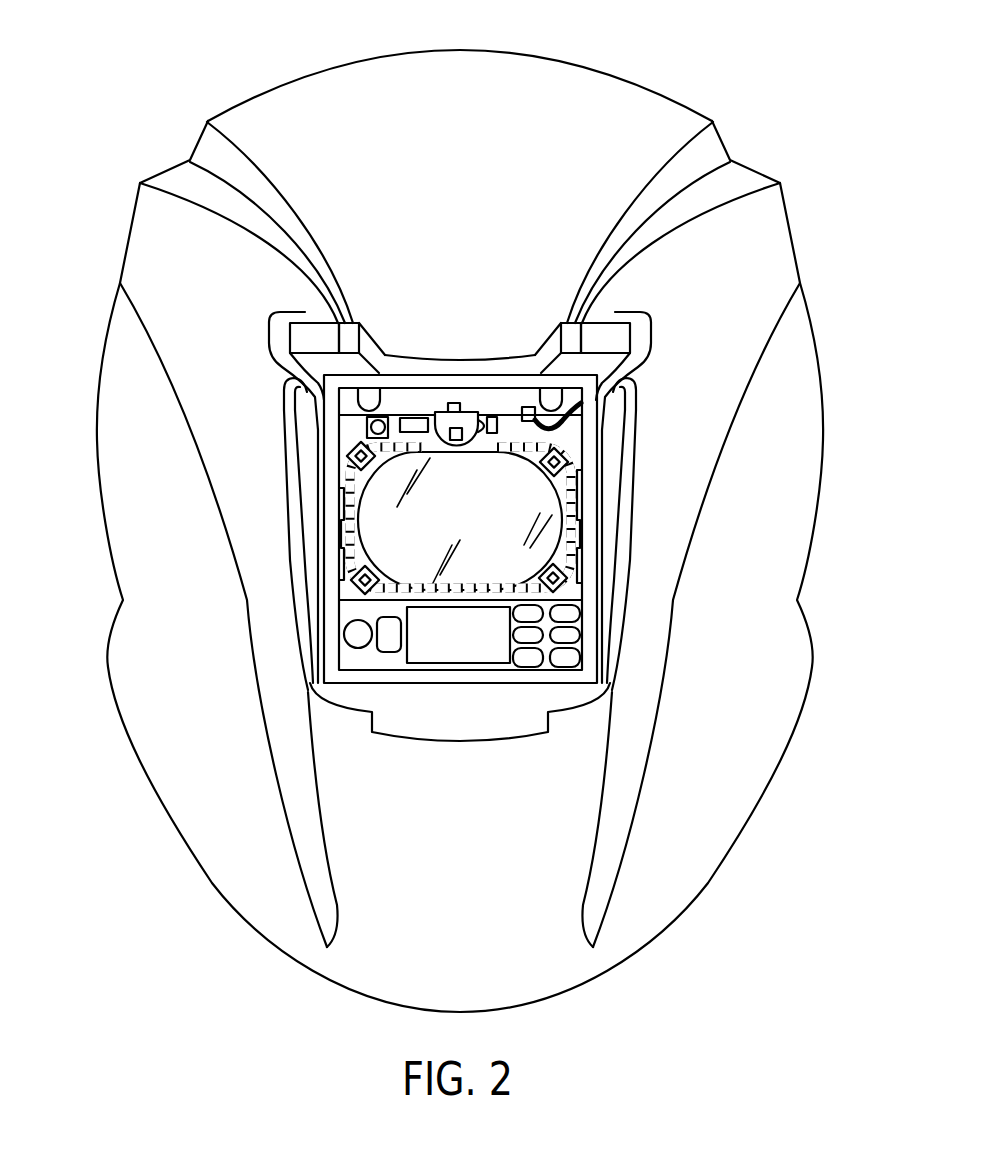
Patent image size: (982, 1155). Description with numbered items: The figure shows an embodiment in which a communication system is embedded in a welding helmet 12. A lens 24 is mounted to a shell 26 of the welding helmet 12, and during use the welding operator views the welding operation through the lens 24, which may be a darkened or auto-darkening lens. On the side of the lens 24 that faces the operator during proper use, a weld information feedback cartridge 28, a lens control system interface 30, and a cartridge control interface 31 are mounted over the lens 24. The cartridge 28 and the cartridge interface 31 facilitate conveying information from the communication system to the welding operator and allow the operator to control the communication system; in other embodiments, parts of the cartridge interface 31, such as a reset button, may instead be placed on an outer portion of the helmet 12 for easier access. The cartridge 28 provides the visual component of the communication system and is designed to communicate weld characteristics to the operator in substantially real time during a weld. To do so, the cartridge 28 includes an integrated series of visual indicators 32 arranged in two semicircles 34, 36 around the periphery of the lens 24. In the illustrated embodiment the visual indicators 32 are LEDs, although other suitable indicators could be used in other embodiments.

The welding helmet 12 is at (740, 48).
The shell 26 is at (700, 108).
The weld information feedback (WIF) cartridge 28 is at (575, 432).
The WIF cartridge control interface 31 is at (360, 433).
The lens 24 is at (572, 490).
The visual indicators 32 is at (362, 502).
The semicircle 34 is at (346, 523).
The semicircle 36 is at (584, 513).
The lens control system interface 30 is at (575, 645).